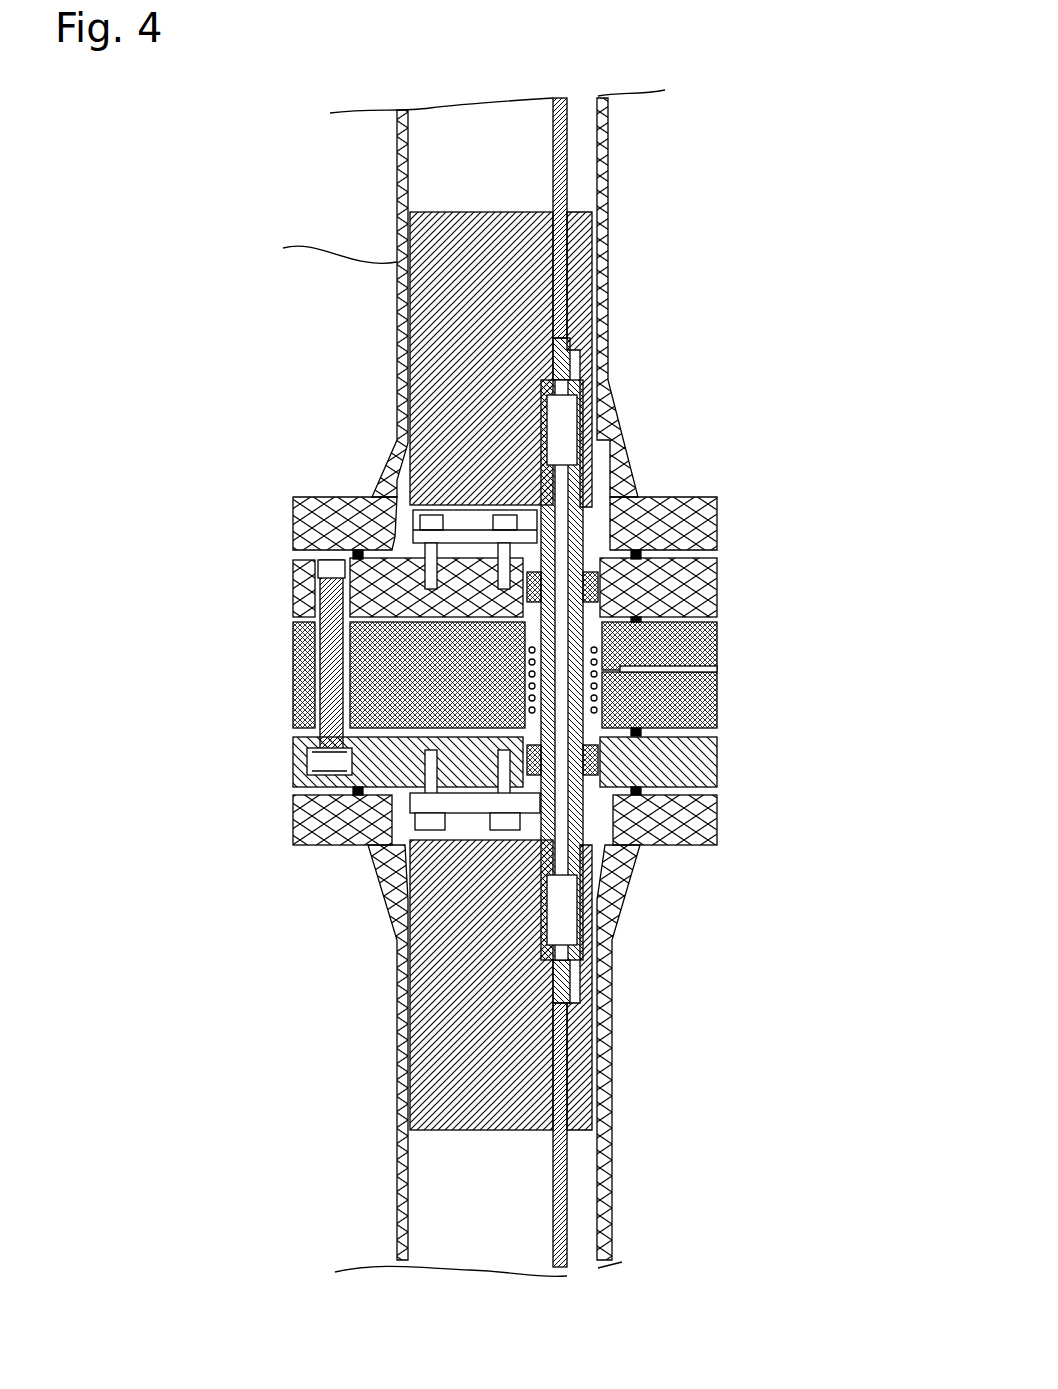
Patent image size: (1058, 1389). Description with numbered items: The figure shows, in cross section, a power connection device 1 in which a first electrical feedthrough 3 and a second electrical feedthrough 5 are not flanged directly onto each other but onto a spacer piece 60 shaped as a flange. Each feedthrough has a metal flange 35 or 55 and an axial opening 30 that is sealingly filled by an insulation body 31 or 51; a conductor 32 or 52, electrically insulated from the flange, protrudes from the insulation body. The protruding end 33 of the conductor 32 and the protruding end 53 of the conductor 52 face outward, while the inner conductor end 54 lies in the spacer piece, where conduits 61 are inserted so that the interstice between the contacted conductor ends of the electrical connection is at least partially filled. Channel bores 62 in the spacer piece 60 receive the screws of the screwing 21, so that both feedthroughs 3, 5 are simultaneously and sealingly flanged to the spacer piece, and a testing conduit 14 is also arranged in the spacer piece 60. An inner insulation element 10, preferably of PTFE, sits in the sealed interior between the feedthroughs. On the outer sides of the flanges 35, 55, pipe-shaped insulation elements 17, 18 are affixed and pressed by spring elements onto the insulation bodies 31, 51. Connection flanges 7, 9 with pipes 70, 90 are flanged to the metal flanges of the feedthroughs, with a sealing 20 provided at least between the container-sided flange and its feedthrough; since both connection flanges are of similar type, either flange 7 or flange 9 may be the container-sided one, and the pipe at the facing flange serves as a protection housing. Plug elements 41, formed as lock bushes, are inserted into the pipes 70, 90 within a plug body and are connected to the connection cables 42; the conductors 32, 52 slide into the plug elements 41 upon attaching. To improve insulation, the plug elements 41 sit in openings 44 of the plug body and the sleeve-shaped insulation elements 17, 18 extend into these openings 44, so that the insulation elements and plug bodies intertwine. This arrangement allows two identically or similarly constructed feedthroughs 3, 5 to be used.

The power connection device 1 is at (160, 186).
The first electrical feedthrough 3 is at (547, 568).
The second electrical feedthrough 5 is at (512, 792).
The connection flange 7 is at (290, 503).
The connection flange 9 is at (293, 830).
The inner insulation element 10 is at (293, 765).
The testing conduit 14 is at (717, 665).
The pipe-shaped insulation element 17 is at (640, 478).
The pipe-shaped insulation element 18 is at (623, 855).
The sealing 20 is at (717, 645).
The screwing 21 is at (232, 627).
The opening 30 is at (717, 562).
The insulation body 31 is at (717, 608).
The conductor 32 is at (293, 583).
The protruding conductor end 33 is at (620, 418).
The metal flange 35 is at (293, 568).
The plug element 41 is at (739, 679).
The connection cable 42 is at (567, 175).
The opening in plug body 44 is at (485, 418).
The insulation body 51 is at (717, 752).
The conductor 52 is at (717, 815).
The protruding conductor end 53 is at (575, 970).
The conductor end 54 is at (293, 697).
The metal flange 55 is at (293, 780).
The spacer piece 60 is at (717, 685).
The conduit 61 is at (717, 718).
The channel bore 62 is at (293, 652).
The pipe 70 is at (393, 332).
The pipe 90 is at (397, 975).